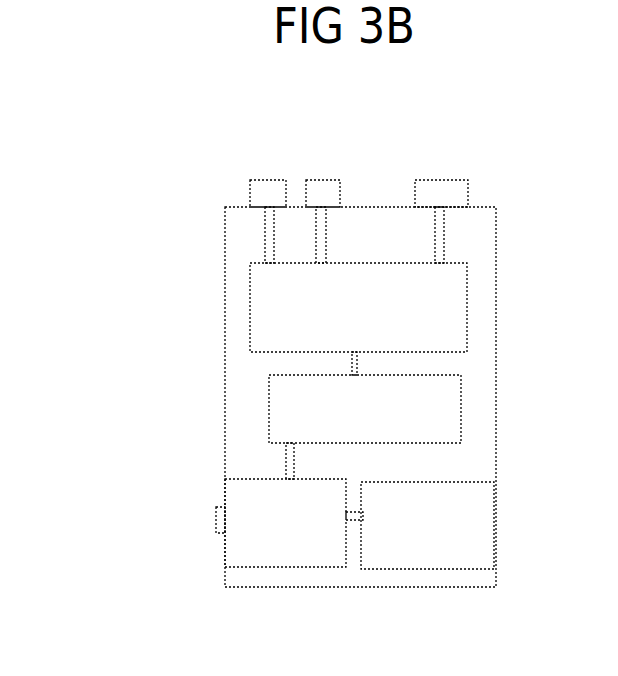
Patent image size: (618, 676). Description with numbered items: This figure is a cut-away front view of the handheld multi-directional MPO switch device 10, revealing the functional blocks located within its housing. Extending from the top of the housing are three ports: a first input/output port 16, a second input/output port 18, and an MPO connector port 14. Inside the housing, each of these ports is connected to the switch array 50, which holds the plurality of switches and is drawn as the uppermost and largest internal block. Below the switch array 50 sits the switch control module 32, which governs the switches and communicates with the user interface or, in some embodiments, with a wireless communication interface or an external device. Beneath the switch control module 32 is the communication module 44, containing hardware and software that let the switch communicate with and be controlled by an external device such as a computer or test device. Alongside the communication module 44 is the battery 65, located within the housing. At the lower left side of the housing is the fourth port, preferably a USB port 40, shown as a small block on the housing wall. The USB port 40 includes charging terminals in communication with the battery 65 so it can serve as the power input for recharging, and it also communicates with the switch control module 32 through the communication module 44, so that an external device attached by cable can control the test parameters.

The MPO switch device 10 is at (284, 342).
The MPO connector port 14 is at (493, 202).
The first input/output port 16 is at (372, 187).
The second input/output port 18 is at (241, 186).
The switch array 50 is at (417, 319).
The switch control module 32 is at (295, 415).
The communication module 44 is at (249, 496).
The battery 65 is at (479, 525).
The USB port 40 is at (141, 553).